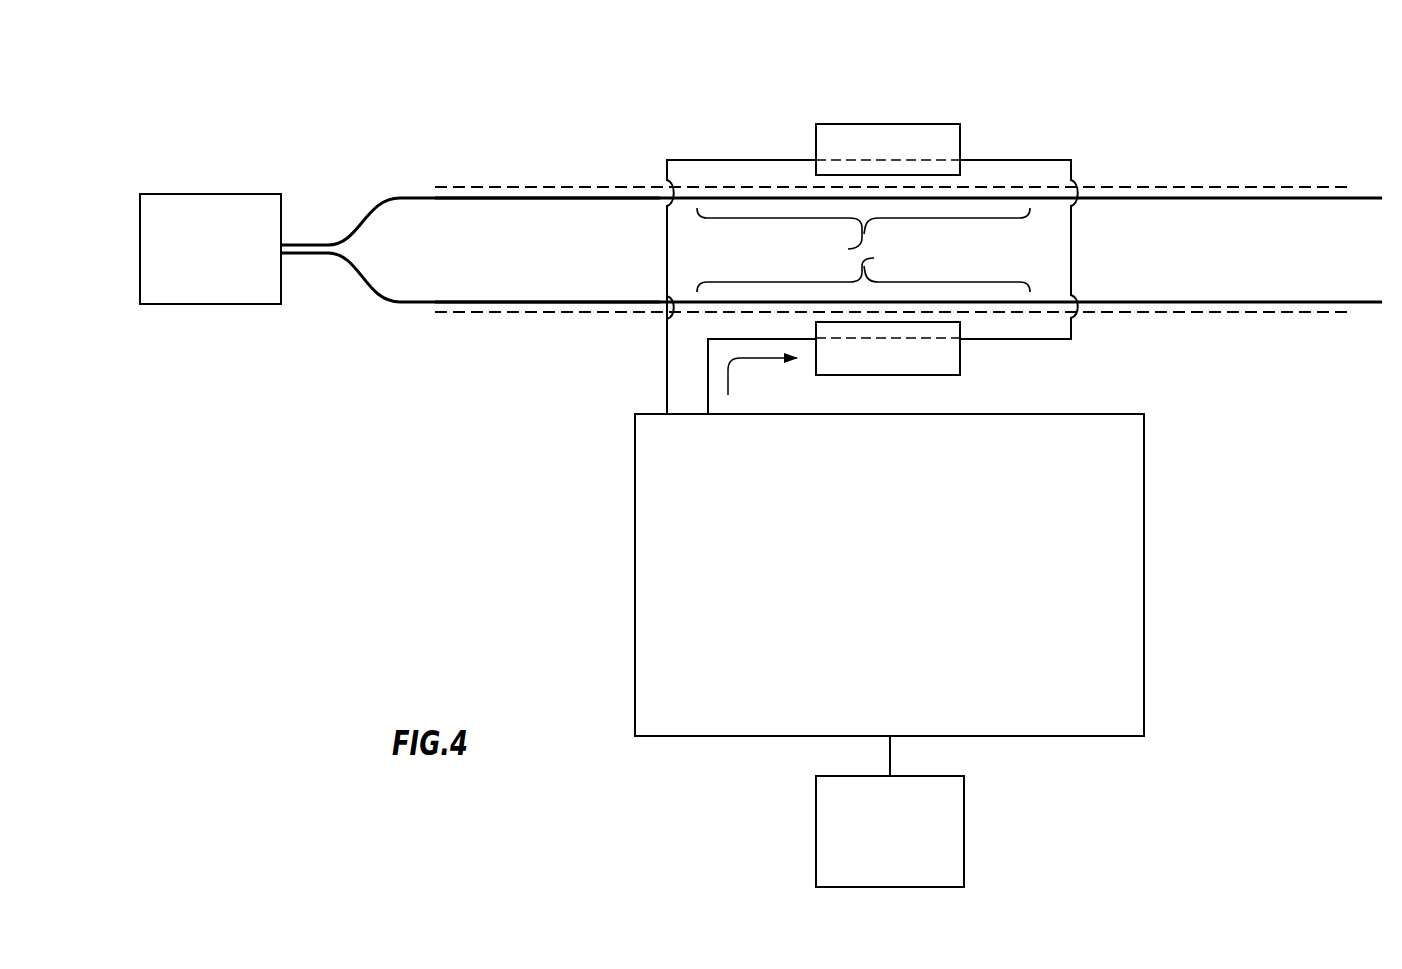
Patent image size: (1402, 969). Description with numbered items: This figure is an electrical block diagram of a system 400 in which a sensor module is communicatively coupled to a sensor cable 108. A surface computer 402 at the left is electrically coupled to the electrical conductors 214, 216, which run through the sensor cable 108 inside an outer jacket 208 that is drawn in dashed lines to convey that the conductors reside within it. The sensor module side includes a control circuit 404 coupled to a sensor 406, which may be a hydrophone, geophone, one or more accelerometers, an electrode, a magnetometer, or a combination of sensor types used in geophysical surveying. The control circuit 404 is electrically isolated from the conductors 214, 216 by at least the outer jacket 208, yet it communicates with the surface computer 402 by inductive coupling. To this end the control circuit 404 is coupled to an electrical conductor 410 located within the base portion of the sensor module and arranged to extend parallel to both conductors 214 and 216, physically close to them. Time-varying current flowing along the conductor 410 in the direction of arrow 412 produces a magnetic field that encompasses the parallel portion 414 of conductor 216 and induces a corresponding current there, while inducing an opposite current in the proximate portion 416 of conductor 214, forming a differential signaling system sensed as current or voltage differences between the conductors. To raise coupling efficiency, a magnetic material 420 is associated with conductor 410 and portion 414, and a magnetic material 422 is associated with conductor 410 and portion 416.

The system 400 is at (289, 92).
The surface computer 402 is at (203, 193).
The control circuit 404 is at (869, 588).
The sensor 406 is at (964, 805).
The sensor cable 108 is at (497, 175).
The outer jacket 208 is at (1272, 185).
The electrical conductor 214 is at (368, 213).
The electrical conductor 216 is at (368, 283).
The electrical conductor 410 is at (1030, 339).
The arrow 412 is at (758, 358).
The portion of electrical conductor 414 is at (874, 258).
The portion of electrical conductor 416 is at (848, 249).
The magnetic material 420 is at (942, 375).
The magnetic material 422 is at (903, 124).